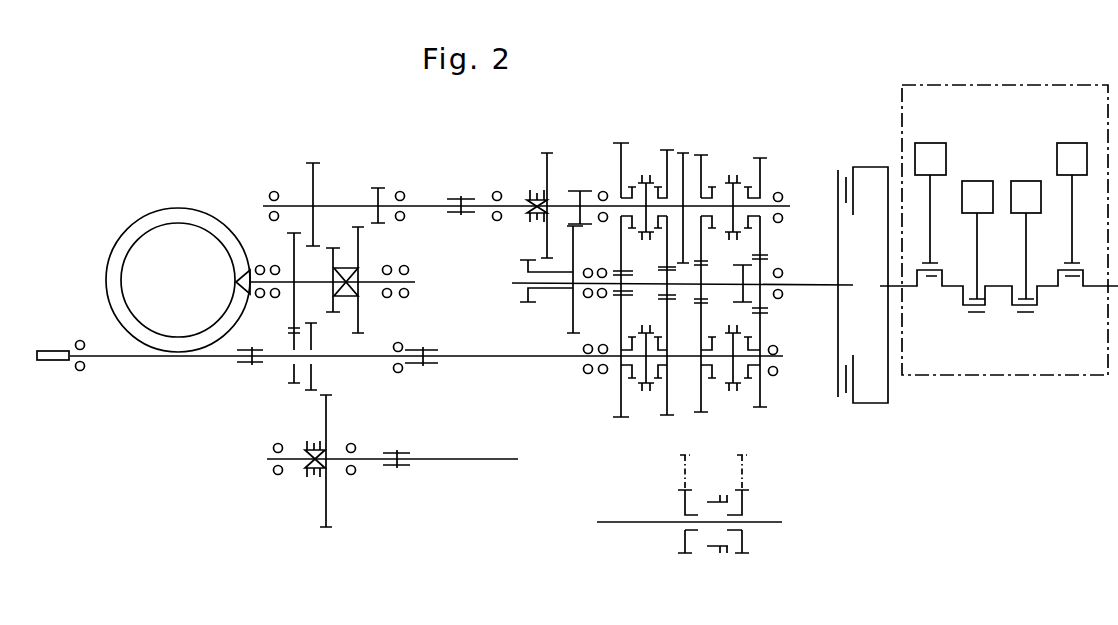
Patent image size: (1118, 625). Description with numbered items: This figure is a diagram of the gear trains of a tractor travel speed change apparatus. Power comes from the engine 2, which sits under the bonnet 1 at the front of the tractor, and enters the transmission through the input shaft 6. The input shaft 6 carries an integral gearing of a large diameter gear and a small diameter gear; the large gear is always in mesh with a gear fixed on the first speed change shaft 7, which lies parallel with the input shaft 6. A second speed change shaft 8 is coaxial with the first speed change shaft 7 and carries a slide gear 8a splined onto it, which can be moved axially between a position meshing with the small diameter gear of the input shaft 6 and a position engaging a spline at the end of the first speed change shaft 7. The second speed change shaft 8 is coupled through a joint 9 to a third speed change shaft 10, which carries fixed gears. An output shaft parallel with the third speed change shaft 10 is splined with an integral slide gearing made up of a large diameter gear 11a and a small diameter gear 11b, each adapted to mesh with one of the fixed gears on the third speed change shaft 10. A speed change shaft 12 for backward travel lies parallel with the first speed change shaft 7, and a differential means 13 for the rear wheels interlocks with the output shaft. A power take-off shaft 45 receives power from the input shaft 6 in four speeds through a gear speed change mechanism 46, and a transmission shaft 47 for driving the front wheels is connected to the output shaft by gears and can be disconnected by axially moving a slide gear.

The bonnet 1 is at (367, 277).
The engine 2 is at (1003, 91).
The input shaft 6 is at (808, 290).
The first speed change shaft 7 is at (775, 205).
The second speed change shaft 8 is at (518, 202).
The slide gear 8a is at (548, 164).
The joint 9 is at (455, 198).
The third speed change shaft 10 is at (343, 205).
The large diameter gear 11a is at (357, 337).
The small diameter gear 11b is at (332, 293).
The speed change shaft for backward travel 12 is at (623, 524).
The differential means 13 is at (128, 211).
The power take-off shaft 45 is at (113, 358).
The gear speed change mechanism 46 is at (736, 412).
The transmission shaft 47 is at (372, 462).